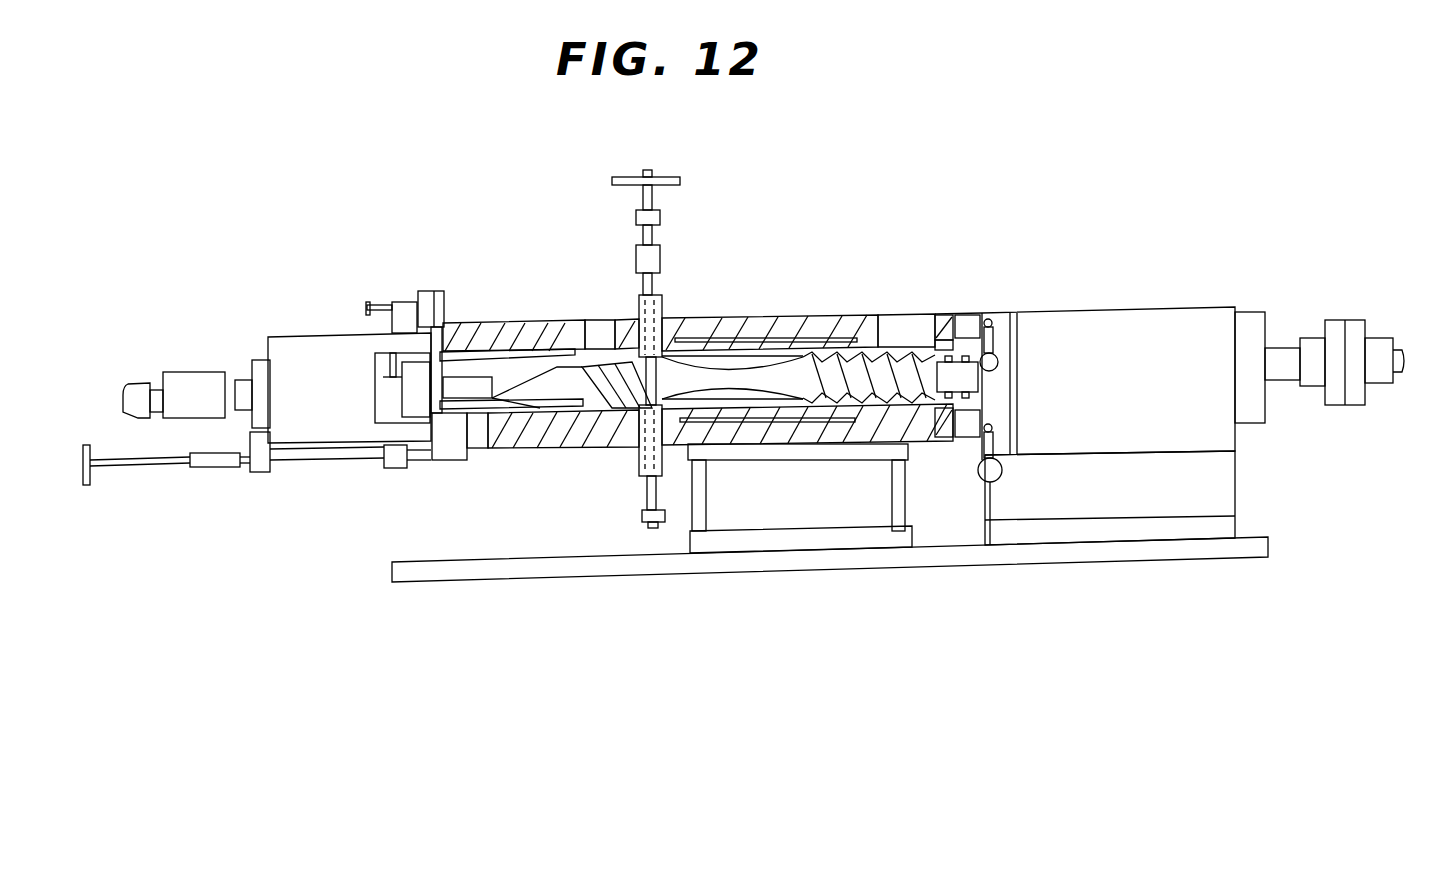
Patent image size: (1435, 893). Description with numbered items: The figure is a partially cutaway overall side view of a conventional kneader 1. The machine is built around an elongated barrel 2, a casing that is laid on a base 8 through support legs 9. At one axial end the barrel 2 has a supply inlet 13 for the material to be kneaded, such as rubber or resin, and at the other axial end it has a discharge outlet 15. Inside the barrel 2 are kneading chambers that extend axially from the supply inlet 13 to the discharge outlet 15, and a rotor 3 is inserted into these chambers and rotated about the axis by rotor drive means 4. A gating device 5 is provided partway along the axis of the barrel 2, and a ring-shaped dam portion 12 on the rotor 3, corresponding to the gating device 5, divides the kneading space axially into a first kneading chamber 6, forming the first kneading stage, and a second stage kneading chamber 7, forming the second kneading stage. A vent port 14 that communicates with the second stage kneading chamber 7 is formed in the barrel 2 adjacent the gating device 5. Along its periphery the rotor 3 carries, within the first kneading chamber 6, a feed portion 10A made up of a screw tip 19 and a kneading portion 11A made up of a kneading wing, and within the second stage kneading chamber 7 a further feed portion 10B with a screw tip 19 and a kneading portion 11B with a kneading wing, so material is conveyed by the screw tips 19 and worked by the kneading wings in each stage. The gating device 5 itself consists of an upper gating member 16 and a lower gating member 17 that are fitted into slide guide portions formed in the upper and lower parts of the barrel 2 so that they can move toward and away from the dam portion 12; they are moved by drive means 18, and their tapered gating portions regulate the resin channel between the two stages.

The kneader 1 is at (562, 233).
The barrel 2 is at (815, 322).
The rotor 3 is at (777, 322).
The rotor drive means 4 is at (1143, 330).
The gating device 5 is at (675, 257).
The first kneading chamber 6 is at (790, 392).
The second stage kneading chamber 7 is at (540, 420).
The base 8 is at (928, 557).
The support legs 9 is at (907, 484).
The feed portion 10A is at (893, 332).
The feed portion 10B is at (597, 440).
The kneading portion 11A is at (737, 318).
The kneading portion 11B is at (493, 372).
The dam portion 12 is at (673, 446).
The supply inlet 13 is at (913, 332).
The vent port 14 is at (600, 335).
The discharge outlet 15 is at (452, 448).
The upper gating member 16 is at (675, 312).
The lower gating member 17 is at (633, 438).
The drive means 18 is at (655, 197).
The screw tip 19 is at (578, 358).